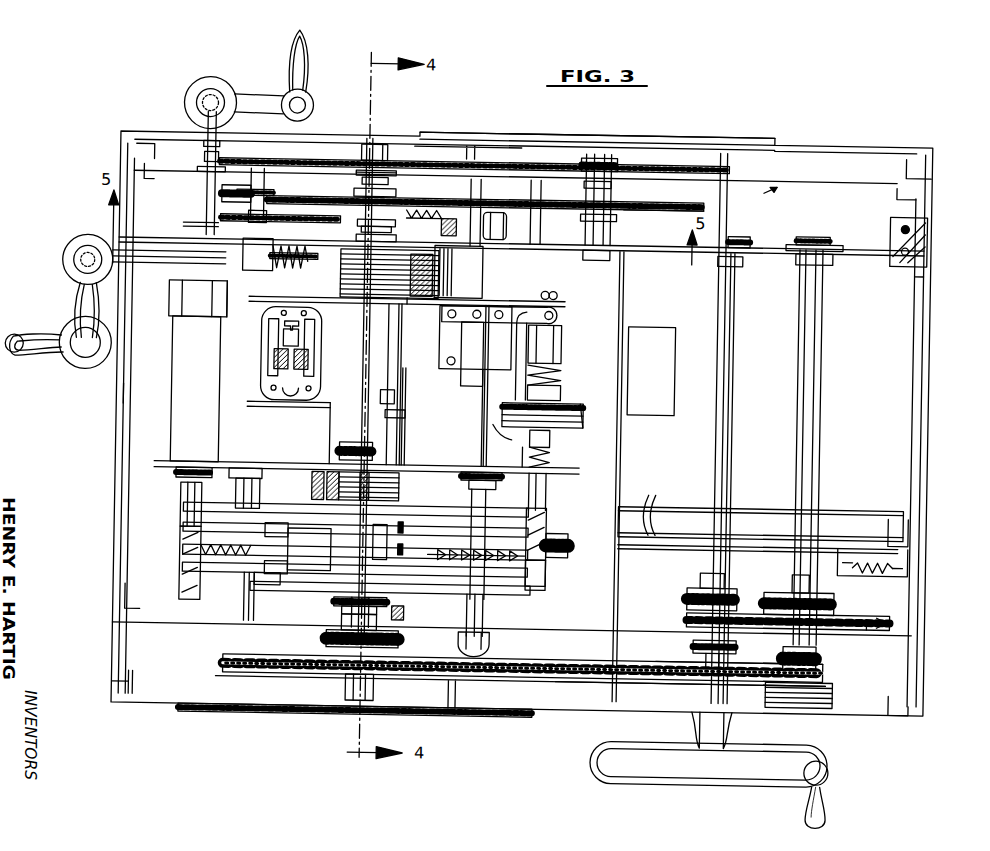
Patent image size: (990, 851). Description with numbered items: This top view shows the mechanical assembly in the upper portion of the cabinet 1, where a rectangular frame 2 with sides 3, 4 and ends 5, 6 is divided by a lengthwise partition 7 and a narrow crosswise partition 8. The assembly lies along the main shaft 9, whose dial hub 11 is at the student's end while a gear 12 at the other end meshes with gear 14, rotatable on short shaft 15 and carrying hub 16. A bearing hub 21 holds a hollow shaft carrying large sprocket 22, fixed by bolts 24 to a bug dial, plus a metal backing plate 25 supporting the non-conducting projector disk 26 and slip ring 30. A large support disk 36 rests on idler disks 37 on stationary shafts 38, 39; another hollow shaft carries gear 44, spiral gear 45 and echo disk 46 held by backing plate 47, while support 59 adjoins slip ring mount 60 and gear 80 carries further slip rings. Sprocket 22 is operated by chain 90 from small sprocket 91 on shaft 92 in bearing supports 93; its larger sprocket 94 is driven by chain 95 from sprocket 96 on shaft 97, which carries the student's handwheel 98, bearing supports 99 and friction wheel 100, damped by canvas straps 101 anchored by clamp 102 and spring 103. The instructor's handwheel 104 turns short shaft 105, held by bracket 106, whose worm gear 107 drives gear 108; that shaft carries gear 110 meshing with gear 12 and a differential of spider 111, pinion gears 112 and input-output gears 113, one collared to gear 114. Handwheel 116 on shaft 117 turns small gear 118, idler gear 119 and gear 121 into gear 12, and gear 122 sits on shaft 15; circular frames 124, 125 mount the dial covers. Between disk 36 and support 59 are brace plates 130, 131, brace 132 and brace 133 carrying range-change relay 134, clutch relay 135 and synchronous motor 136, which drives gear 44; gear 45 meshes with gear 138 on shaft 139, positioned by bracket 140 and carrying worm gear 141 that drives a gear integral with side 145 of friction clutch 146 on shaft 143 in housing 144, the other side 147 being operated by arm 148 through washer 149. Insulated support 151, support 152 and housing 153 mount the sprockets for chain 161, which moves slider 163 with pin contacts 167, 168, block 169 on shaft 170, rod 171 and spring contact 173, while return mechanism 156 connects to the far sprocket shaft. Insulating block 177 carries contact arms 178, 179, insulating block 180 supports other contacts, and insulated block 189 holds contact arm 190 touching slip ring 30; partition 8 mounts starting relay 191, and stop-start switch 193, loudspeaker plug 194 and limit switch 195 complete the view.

The cabinet 1 is at (878, 140).
The frame 2 is at (759, 197).
The frame side 3 is at (830, 179).
The frame side 4 is at (610, 626).
The frame end 5 is at (923, 276).
The frame end 6 is at (123, 403).
The partition 7 is at (772, 250).
The partition 8 is at (619, 478).
The main shaft 9 is at (380, 181).
The hub 11 is at (350, 692).
The gear 12 is at (367, 158).
The gear 14 is at (548, 163).
The hub 16 is at (590, 160).
The short shaft 15 is at (592, 259).
The bearing hub 21 is at (330, 639).
The large sprocket 22 is at (227, 666).
The bolts 24 is at (453, 690).
The metal backing plate 25 is at (486, 609).
The projector disk 26 is at (533, 592).
The slip ring 30 is at (345, 613).
The support disk 36 is at (297, 465).
The idler disks 37 is at (462, 477).
The stationary shaft 38 is at (493, 625).
The stationary shaft 39 is at (247, 611).
The gear 44 is at (405, 416).
The spiral gear 45 is at (340, 452).
The echo disk 46 is at (312, 498).
The metal backing plate 47 is at (285, 495).
The support 59 is at (560, 302).
The slip ring mount 60 is at (324, 268).
The gear 80 is at (427, 200).
The chain 90 is at (603, 680).
The small sprocket 91 is at (828, 670).
The shaft 92 is at (827, 324).
The bearing supports 93 is at (828, 232).
The larger sprocket 94 is at (882, 610).
The chain 95 is at (868, 610).
The sprocket 96 is at (690, 612).
The shaft 97 is at (733, 343).
The student's handwheel 98 is at (834, 766).
The bearing supports 99 is at (756, 228).
The friction wheel 100 is at (768, 505).
The canvas straps 101 is at (657, 508).
The clamp 102 is at (905, 512).
The spring 103 is at (868, 545).
The handwheel 104 is at (52, 322).
The short shaft 105 is at (178, 270).
The bracket 106 is at (240, 268).
The worm gear 107 is at (292, 266).
The gear 108 is at (342, 286).
The gear 110 is at (214, 165).
The spider 111 is at (245, 207).
The pinion gears 112 is at (218, 197).
The input-output gears 113 is at (240, 215).
The gear 114 is at (200, 228).
The handwheel 116 is at (224, 82).
The shaft 117 is at (200, 150).
The small gear 118 is at (217, 224).
The idler gear 119 is at (352, 185).
The gear 121 is at (275, 158).
The gear 122 is at (668, 214).
The circular frame 124 is at (310, 715).
The circular frame 125 is at (625, 138).
The brace plate 130 is at (262, 366).
The brace plate 131 is at (462, 418).
The brace 132 is at (392, 338).
The brace 133 is at (290, 410).
The range-change relay 134 is at (282, 342).
The clutch relay 135 is at (462, 377).
The synchronous motor 136 is at (560, 392).
The gear 138 is at (335, 428).
The shaft 139 is at (435, 432).
The bracket 140 is at (493, 428).
The worm gear 141 is at (550, 465).
The shaft 143 is at (545, 290).
The housing 144 is at (548, 488).
The clutch side 145 is at (550, 444).
The friction clutch 146 is at (590, 432).
The clutch side 147 is at (585, 410).
The arm 148 is at (556, 318).
The washer 149 is at (555, 330).
The insulated support 151 is at (556, 568).
The support 152 is at (182, 575).
The housing 153 is at (188, 500).
The return mechanism 156 is at (195, 392).
The chain 161 is at (543, 575).
The slider 163 is at (275, 538).
The pin contact 167 is at (280, 590).
The pin contact 168 is at (285, 520).
The insulated block 169 is at (190, 538).
The shaft 170 is at (355, 549).
The rod 171 is at (305, 572).
The spring contact 173 is at (400, 530).
The insulating block 177 is at (466, 207).
The contact arm 178 is at (447, 247).
The contact arm 179 is at (480, 210).
The insulating block 180 is at (412, 300).
The insulated block 189 is at (402, 622).
The contact arm 190 is at (405, 608).
The starting relay 191 is at (674, 351).
The two button stop-start switch 193 is at (837, 690).
The two-wire male plug 194 is at (924, 233).
The limit switch 195 is at (548, 528).